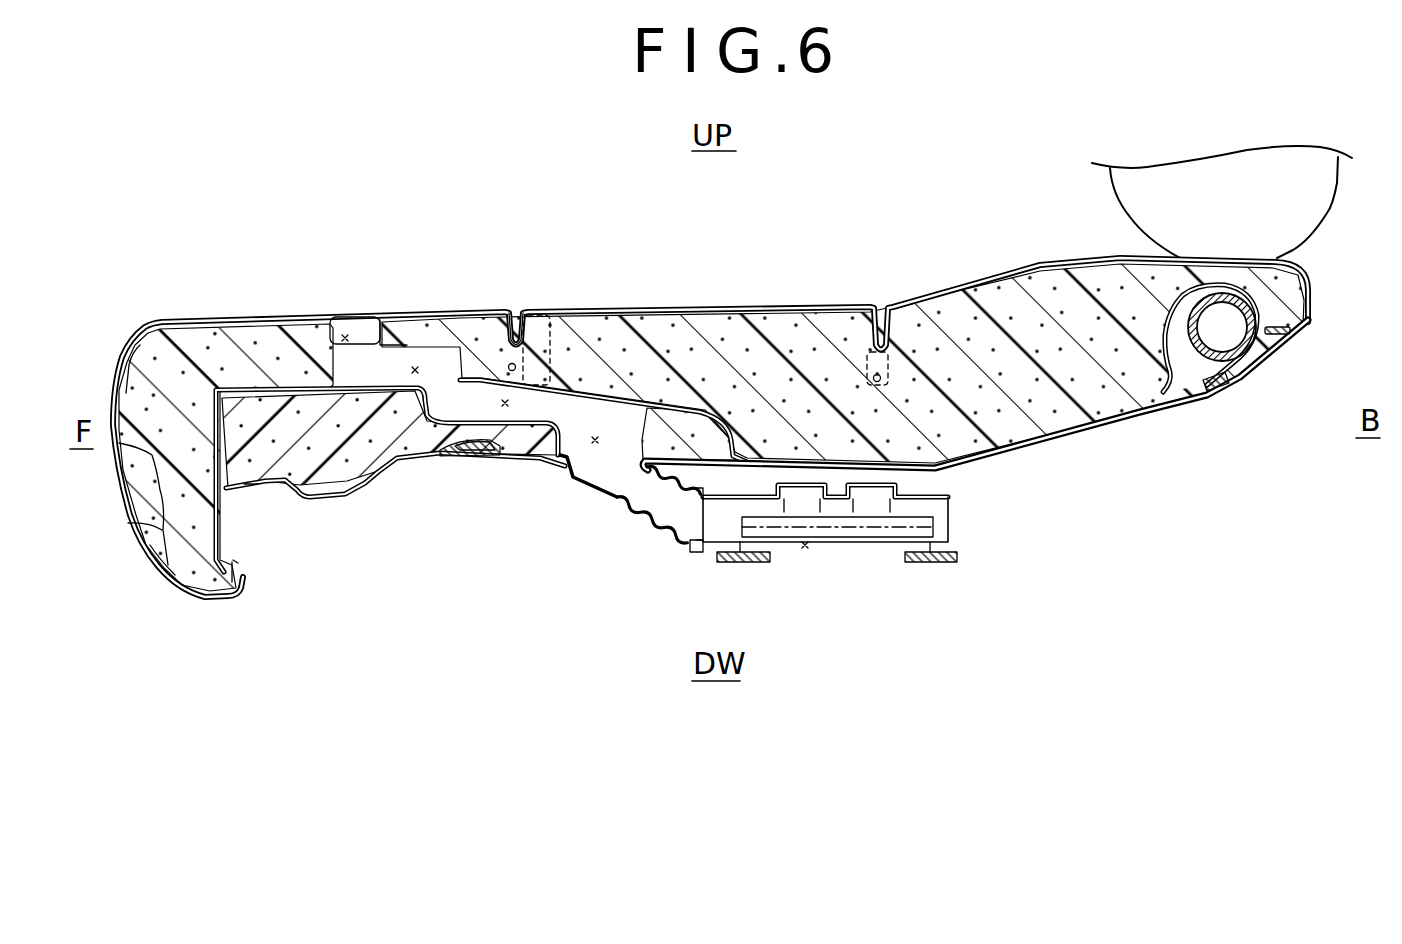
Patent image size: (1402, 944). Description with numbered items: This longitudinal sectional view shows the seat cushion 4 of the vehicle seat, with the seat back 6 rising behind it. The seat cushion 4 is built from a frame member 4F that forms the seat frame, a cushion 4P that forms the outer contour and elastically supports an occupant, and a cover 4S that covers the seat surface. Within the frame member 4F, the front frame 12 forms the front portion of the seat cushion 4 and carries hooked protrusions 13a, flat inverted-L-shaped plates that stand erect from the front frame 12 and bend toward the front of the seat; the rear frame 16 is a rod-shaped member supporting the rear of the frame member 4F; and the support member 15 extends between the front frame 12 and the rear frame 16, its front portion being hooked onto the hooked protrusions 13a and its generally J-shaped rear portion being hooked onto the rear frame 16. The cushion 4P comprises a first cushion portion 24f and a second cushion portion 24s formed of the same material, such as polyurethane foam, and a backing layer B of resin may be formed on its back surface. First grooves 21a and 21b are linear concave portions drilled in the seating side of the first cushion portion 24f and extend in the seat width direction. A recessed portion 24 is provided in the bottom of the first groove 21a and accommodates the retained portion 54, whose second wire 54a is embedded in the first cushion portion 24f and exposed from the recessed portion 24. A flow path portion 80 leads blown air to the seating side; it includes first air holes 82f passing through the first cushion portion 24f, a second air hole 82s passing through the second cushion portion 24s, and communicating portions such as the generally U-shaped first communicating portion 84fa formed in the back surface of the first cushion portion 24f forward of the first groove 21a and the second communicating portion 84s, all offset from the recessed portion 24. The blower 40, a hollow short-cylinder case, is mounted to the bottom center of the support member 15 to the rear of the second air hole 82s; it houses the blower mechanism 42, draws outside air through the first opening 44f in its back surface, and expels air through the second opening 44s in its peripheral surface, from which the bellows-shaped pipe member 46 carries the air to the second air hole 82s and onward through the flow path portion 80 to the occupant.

The seat cushion 4 is at (1324, 297).
The frame member 4F is at (1210, 385).
The cushion 4P is at (1280, 345).
The cover 4S is at (1250, 375).
The seat back 6 is at (1320, 235).
The front frame 12 is at (330, 497).
The hooked protrusions 13a is at (470, 457).
The support member 15 is at (1080, 433).
The rear frame 16 is at (1183, 360).
The first groove 21a is at (514, 330).
The first groove 21b is at (879, 330).
The recessed portion 24 is at (540, 316).
The first cushion portion 24f is at (262, 350).
The second cushion portion 24s is at (275, 457).
The blower 40 is at (962, 523).
The blower mechanism 42 is at (867, 538).
The first opening 44f is at (805, 546).
The second opening 44s is at (688, 540).
The pipe member 46 is at (670, 545).
The retained portion 54 is at (581, 362).
The second wire 54a is at (510, 364).
The flow path portion 80 is at (476, 385).
The first air holes 82f is at (345, 335).
The second air hole 82s is at (595, 443).
The first communicating portion 84fa is at (415, 368).
The second communicating portion 84s is at (503, 407).
The backing layer B is at (250, 488).